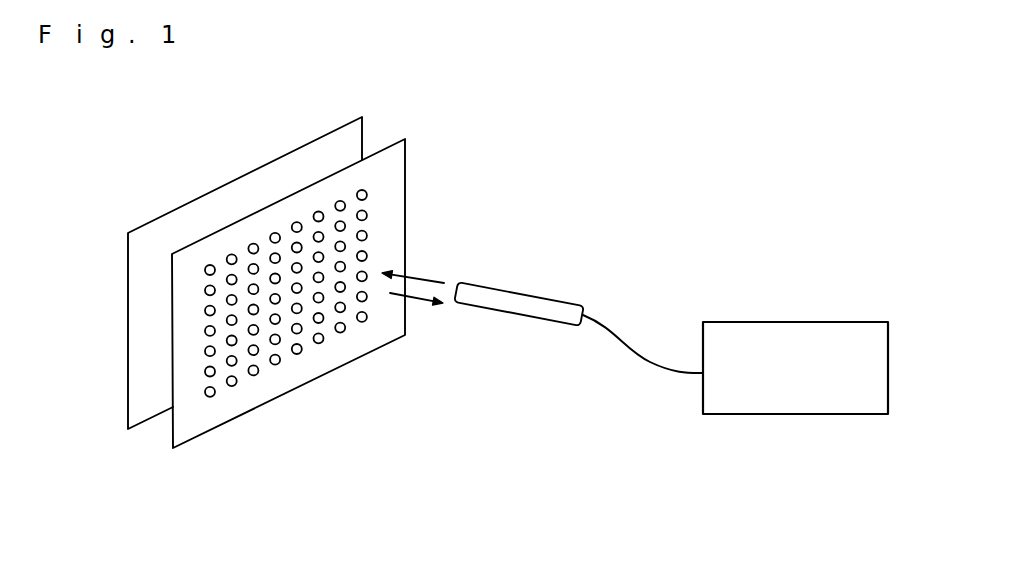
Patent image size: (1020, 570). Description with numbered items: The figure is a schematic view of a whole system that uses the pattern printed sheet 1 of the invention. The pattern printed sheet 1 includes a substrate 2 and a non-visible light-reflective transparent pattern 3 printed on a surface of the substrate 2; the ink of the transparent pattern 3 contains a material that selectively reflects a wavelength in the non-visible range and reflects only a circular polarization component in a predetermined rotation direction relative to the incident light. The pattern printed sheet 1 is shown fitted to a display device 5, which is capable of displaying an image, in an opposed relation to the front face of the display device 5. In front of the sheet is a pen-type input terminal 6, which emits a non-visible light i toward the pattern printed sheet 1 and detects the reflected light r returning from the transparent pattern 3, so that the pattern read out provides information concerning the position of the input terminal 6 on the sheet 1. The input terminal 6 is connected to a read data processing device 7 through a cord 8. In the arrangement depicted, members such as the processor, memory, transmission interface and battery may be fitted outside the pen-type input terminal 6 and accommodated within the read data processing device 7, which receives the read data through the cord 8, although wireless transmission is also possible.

The pattern printed sheet 1 is at (315, 315).
The substrate 2 is at (193, 417).
The transparent pattern 3 is at (368, 194).
The display device 5 is at (184, 223).
The input terminal 6 is at (515, 292).
The read data processing device 7 is at (778, 322).
The cord 8 is at (637, 352).
The non-visible light i is at (417, 278).
The reflected light r is at (413, 302).